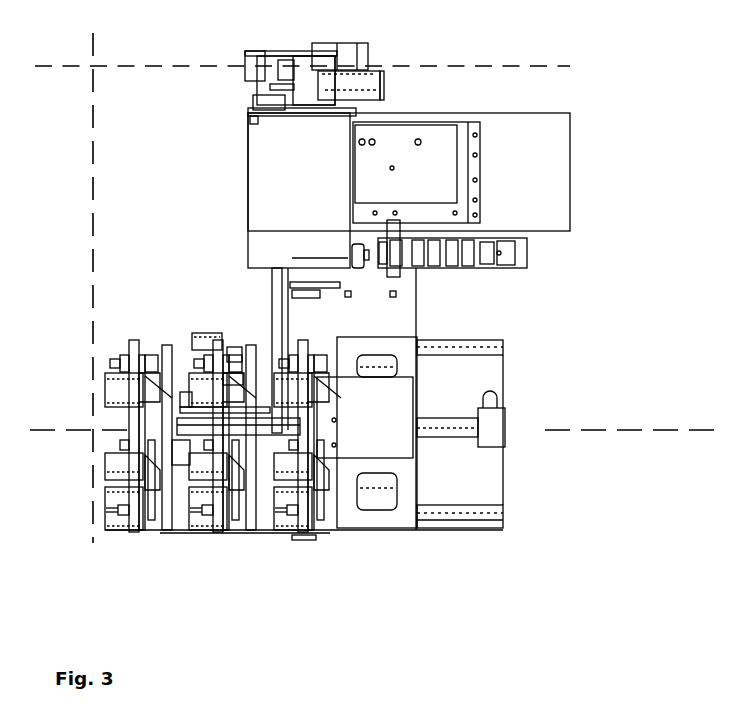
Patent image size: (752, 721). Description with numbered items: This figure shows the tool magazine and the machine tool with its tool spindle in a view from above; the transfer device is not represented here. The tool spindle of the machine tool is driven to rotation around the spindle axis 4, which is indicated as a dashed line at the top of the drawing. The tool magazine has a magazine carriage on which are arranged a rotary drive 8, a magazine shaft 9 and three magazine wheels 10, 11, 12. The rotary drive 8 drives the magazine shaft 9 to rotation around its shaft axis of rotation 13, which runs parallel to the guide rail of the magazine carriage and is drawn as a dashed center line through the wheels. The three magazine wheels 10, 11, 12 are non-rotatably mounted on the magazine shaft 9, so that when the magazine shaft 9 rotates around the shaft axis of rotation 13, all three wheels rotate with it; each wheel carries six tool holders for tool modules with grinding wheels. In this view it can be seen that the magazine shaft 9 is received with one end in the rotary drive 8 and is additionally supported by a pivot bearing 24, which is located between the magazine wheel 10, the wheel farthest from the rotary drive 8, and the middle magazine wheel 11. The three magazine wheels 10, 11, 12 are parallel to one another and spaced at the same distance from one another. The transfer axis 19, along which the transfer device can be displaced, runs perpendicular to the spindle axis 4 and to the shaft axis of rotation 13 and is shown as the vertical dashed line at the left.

The spindle axis 4 is at (484, 66).
The rotary drive 8 is at (383, 435).
The magazine shaft 9 is at (272, 430).
The magazine wheel 10 is at (130, 545).
The magazine wheel 11 is at (216, 545).
The magazine wheel 12 is at (299, 548).
The shaft axis of rotation 13 is at (558, 430).
The transfer axis 19 is at (94, 152).
The pivot bearing 24 is at (165, 408).